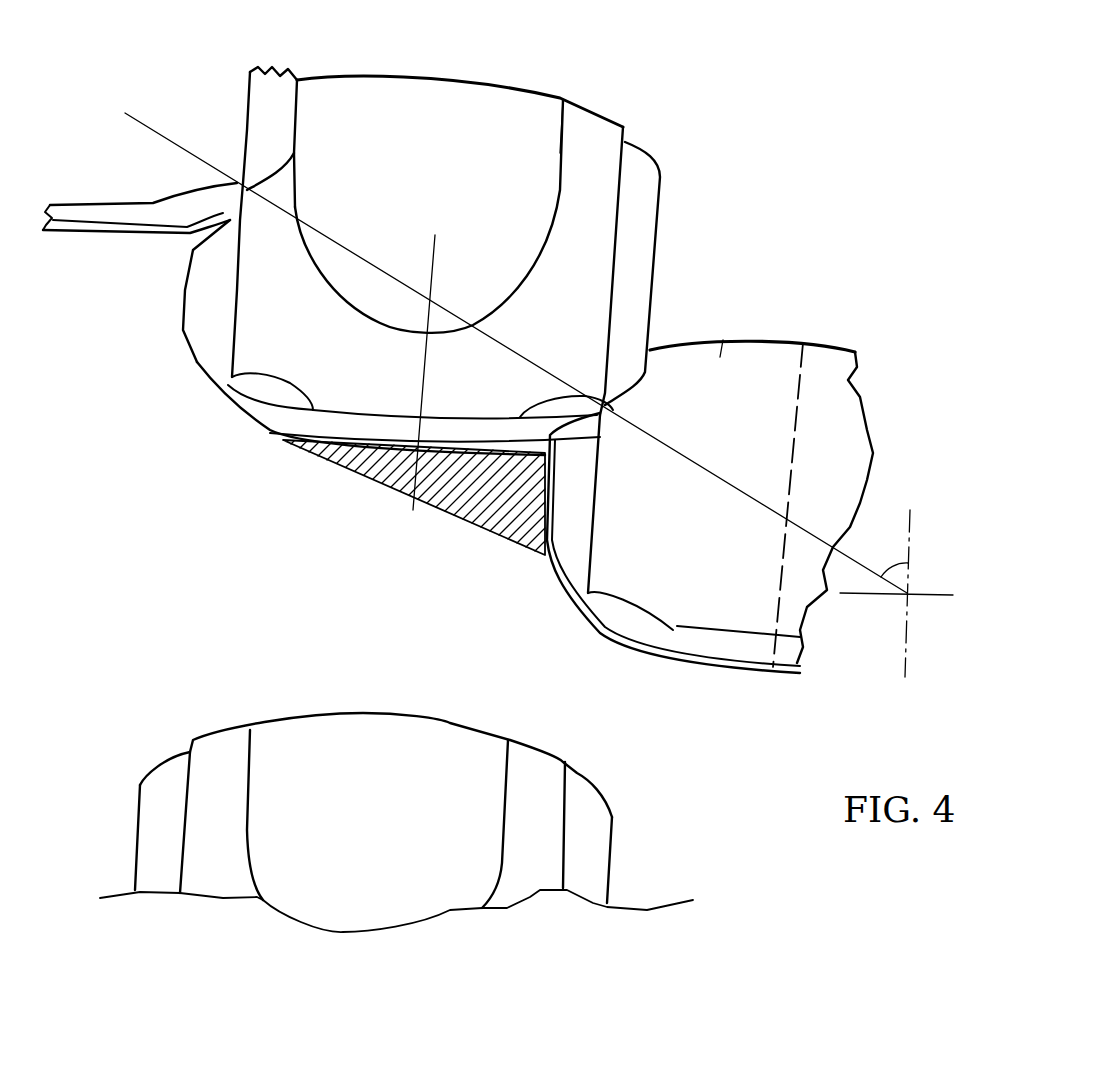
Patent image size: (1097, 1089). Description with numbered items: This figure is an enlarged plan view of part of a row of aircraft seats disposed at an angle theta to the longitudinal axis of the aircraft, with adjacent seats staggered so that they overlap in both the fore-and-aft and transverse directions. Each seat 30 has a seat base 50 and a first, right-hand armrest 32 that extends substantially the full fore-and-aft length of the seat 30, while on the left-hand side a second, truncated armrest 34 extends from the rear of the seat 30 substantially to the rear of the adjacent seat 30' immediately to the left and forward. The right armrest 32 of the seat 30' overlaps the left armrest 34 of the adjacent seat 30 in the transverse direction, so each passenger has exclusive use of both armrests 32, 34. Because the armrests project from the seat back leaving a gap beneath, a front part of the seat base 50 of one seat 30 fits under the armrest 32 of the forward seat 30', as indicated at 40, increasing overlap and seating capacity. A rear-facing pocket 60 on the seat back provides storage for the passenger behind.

The seat 30 is at (730, 460).
The adjacent seat 30' is at (432, 271).
The first armrest 32 is at (280, 102).
The second truncated armrest 34 is at (203, 290).
The overlap region 40 is at (632, 405).
The seat base 50 is at (453, 95).
The pocket 60 is at (377, 473).